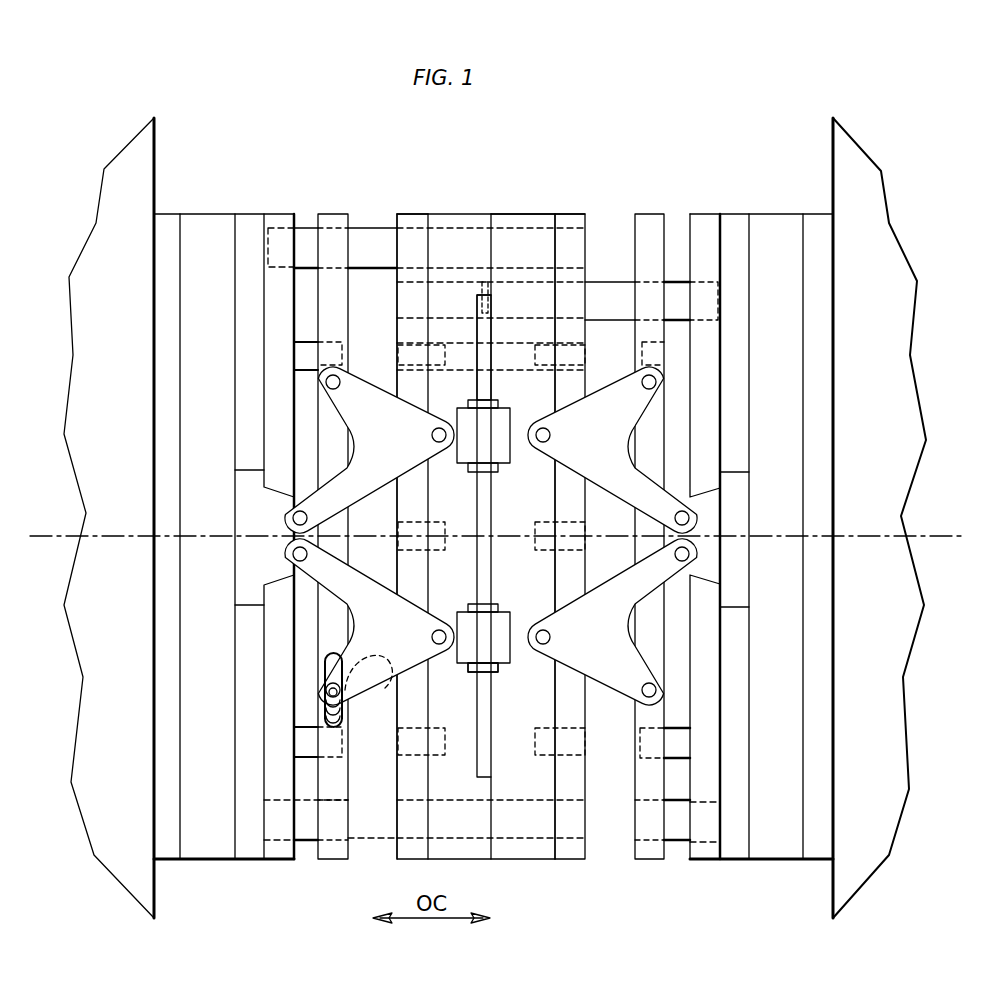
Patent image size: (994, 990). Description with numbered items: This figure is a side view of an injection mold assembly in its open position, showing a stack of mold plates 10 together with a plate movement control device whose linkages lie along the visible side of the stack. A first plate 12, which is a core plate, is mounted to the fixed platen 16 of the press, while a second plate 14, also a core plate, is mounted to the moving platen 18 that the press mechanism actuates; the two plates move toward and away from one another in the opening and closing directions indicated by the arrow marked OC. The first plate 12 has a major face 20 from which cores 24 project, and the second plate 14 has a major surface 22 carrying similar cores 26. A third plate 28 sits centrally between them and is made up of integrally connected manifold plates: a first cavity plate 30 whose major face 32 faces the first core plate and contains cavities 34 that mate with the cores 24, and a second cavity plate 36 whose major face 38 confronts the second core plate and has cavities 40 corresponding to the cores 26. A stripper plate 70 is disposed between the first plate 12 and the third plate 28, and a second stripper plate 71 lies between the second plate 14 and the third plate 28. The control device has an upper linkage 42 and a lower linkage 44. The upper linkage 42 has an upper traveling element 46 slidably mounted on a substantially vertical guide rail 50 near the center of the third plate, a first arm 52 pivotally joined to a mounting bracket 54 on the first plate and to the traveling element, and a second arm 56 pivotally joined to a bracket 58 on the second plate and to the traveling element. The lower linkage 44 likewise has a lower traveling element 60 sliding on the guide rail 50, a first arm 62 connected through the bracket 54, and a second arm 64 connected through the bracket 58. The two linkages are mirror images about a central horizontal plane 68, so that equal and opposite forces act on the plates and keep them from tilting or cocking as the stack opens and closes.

The stack of mold plates 10 is at (494, 483).
The first plate 12 is at (251, 527).
The second plate 14 is at (748, 532).
The fixed platen 16 is at (95, 688).
The moving platen 18 is at (893, 682).
The major face 20 is at (300, 862).
The major surface 22 is at (686, 862).
The cores 24 is at (348, 760).
The cores 26 is at (636, 345).
The third plate 28 is at (510, 208).
The first cavity plate 30 is at (410, 213).
The major face 32 is at (397, 213).
The cavities 34 is at (393, 345).
The second cavity plate 36 is at (565, 212).
The major face 38 is at (588, 222).
The cavities 40 is at (553, 752).
The upper linkage 42 is at (509, 398).
The lower linkage 44 is at (508, 670).
The upper traveling element 46 is at (500, 474).
The guide rail 50 is at (475, 742).
The first arm 52 is at (352, 436).
The mounting bracket 54 is at (240, 500).
The second arm 56 is at (630, 440).
The bracket 58 is at (740, 524).
The lower traveling element 60 is at (498, 605).
The first arm 62 is at (352, 634).
The second arm 64 is at (630, 632).
The central horizontal plane 68 is at (125, 535).
The stripper plate 70 is at (336, 862).
The second stripper plate 71 is at (648, 862).